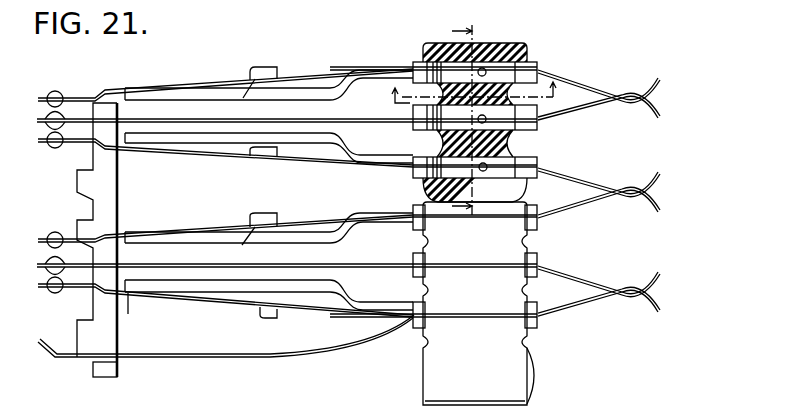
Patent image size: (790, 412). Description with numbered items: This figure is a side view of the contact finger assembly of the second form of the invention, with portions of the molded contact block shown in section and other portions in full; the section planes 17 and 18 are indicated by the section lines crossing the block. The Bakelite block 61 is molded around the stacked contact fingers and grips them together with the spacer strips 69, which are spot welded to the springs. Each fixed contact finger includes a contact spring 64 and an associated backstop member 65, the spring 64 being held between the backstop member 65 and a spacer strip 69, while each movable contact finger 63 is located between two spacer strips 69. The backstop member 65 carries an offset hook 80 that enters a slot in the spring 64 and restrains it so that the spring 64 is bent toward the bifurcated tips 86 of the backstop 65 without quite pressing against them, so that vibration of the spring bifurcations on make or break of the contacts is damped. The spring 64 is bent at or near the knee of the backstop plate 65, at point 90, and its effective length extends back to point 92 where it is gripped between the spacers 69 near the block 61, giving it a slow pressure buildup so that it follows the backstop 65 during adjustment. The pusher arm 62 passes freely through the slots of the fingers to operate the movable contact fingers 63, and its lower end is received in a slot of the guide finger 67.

The section line 17- 17 is at (468, 124).
The section line 18- 18 is at (473, 98).
The Bakelite block 61 is at (506, 43).
The pusher arm 62 is at (118, 207).
The movable contact finger 63 is at (166, 121).
The contact spring 64 is at (183, 84).
The backstop member 65 is at (349, 140).
The guide finger 67 is at (212, 362).
The spacer strip 69 is at (415, 209).
The hook 80 is at (267, 213).
The bifurcations 86 is at (137, 312).
The point 90 is at (360, 66).
The point 92 is at (411, 62).